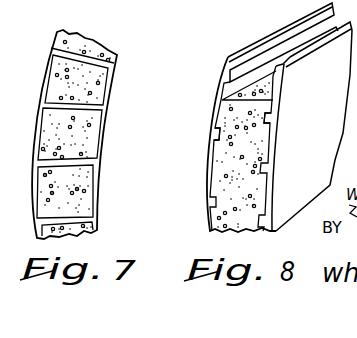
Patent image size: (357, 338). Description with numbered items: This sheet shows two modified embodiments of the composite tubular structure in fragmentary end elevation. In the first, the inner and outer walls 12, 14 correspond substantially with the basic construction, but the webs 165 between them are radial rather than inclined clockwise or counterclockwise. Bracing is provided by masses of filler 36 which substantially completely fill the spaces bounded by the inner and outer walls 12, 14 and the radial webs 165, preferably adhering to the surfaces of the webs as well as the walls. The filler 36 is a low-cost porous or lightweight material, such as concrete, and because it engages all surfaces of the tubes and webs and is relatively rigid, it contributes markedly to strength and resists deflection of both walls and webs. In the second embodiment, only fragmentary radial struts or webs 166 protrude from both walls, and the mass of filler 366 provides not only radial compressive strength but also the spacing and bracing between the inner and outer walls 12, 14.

In FIG. 7, the inner wall 12 is at (112, 86).
In FIG. 8, the inner wall 12 is at (273, 108).
In FIG. 7, the outer wall 14 is at (46, 73).
In FIG. 8, the outer wall 14 is at (221, 88).
In FIG. 7, the filler 36 is at (75, 147).
In FIG. 7, the radial webs 165 is at (77, 110).
In FIG. 8, the fragmentary radial struts or webs 166 is at (212, 133).
In FIG. 8, the filler 366 is at (242, 182).